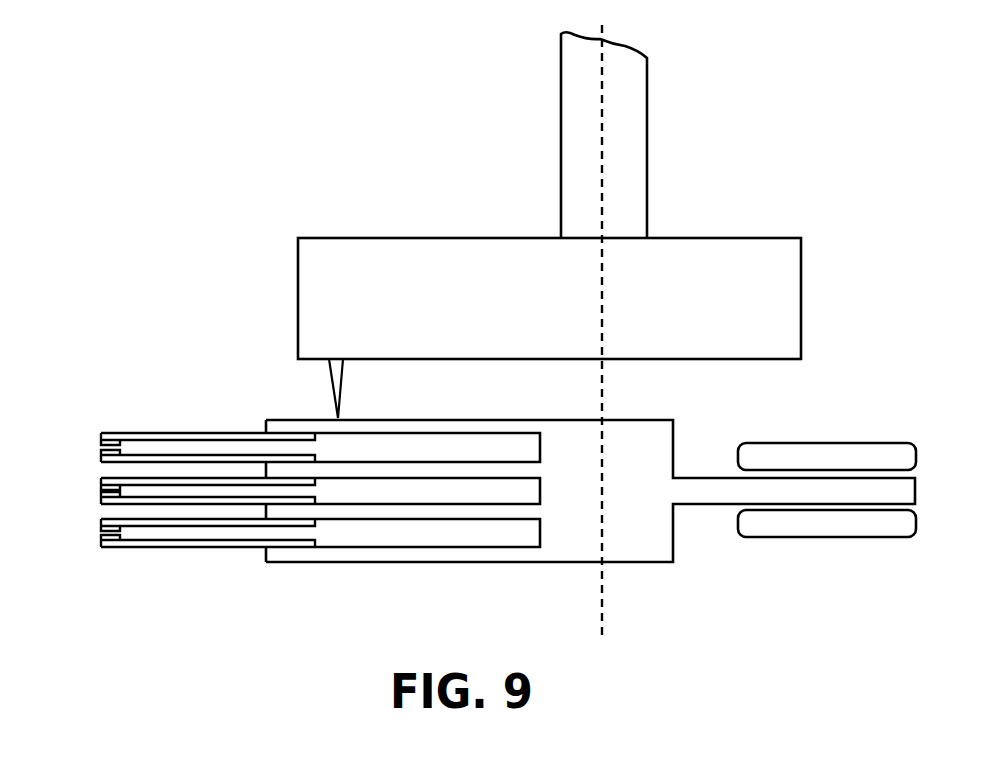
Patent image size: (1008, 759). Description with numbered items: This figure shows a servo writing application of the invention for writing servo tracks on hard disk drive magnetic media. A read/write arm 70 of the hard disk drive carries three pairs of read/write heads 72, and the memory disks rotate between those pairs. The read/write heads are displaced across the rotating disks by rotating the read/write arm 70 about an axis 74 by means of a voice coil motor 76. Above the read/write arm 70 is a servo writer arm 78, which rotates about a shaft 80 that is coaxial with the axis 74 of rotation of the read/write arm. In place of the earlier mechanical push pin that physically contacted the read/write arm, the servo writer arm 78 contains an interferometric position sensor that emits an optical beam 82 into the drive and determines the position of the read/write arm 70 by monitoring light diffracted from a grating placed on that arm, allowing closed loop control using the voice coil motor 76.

The read/write arm 70 is at (537, 562).
The read/write heads 72 is at (93, 528).
The axis 74 is at (603, 604).
The voice coil motor 76 is at (832, 443).
The arm 78 is at (372, 238).
The shaft 80 is at (647, 157).
The optical beam 82 is at (342, 380).